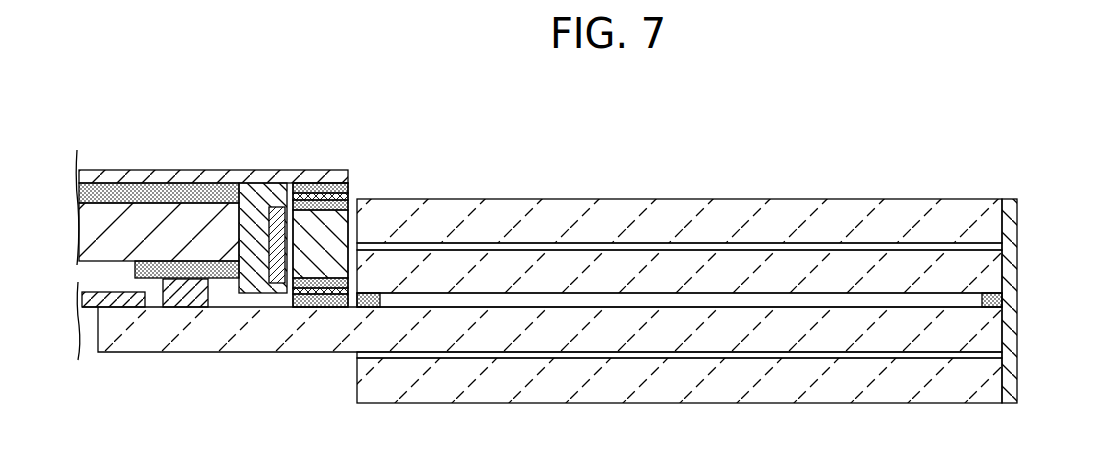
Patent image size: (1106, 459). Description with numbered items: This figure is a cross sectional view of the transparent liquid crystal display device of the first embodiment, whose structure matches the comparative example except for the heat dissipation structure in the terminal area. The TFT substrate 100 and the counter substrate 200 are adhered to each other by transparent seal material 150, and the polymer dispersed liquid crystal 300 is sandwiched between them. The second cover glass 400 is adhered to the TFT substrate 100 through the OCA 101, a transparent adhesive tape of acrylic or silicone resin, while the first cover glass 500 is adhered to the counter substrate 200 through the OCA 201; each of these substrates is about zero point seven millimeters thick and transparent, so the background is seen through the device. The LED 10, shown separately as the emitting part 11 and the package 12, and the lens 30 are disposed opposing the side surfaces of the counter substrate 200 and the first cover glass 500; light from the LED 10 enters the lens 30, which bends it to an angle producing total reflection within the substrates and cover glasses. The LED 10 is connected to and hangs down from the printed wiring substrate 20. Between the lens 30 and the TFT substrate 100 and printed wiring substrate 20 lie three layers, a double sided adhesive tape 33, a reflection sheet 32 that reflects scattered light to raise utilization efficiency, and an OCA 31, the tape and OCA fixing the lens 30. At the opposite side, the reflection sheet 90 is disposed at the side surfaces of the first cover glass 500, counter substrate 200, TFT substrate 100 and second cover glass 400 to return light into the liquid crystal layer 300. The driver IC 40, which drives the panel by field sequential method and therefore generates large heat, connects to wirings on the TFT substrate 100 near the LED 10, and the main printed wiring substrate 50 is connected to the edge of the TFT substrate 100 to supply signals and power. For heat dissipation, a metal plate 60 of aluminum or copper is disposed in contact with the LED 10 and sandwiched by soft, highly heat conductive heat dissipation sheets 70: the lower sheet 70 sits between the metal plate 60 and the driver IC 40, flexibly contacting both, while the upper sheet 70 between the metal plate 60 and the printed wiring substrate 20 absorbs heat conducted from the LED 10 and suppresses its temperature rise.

The LED 10 is at (263, 181).
The emitting part 11 is at (277, 210).
The package 12 is at (253, 217).
The printed wiring substrate 20 is at (178, 180).
The lens 30 is at (368, 201).
The OCA 31 is at (305, 188).
The reflection sheet 32 is at (320, 197).
The double sided adhesive tape 33 is at (333, 207).
The driver IC 40 is at (185, 300).
The main printed wiring substrate 50 is at (128, 300).
The metal plate 60 is at (96, 229).
The heat dissipation sheet 70 is at (116, 193).
The reflection sheet 90 is at (1008, 199).
The TFT substrate 100 is at (990, 328).
The OCA 101 is at (1000, 355).
The transparent seal material 150 is at (990, 300).
The counter substrate 200 is at (993, 272).
The OCA 201 is at (993, 247).
The polymer dispersed liquid crystal 300 is at (808, 300).
The second cover glass 400 is at (995, 378).
The first cover glass 500 is at (983, 227).